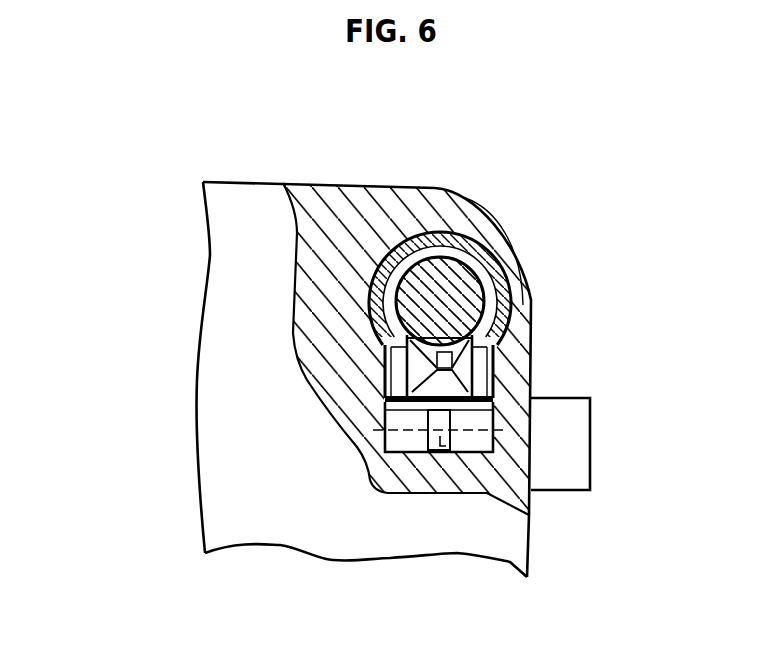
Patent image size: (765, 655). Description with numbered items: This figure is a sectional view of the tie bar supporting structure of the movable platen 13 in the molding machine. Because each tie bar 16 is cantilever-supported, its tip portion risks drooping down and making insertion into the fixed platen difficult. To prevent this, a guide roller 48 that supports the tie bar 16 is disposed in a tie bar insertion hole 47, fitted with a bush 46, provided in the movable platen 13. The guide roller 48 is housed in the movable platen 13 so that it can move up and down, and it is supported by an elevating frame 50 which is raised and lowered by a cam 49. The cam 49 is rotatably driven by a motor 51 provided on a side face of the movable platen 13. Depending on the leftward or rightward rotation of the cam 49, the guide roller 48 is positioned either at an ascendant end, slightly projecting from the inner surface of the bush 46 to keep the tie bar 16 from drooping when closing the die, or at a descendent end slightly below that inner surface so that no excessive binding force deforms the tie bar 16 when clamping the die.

The movable platen 13 is at (200, 239).
The tie bar 16 is at (458, 294).
The bush 46 is at (457, 225).
The tie bar insertion hole 47 is at (426, 238).
The guide roller 48 is at (470, 371).
The cam 49 is at (437, 440).
The elevating frame 50 is at (407, 402).
The motor 51 is at (560, 463).